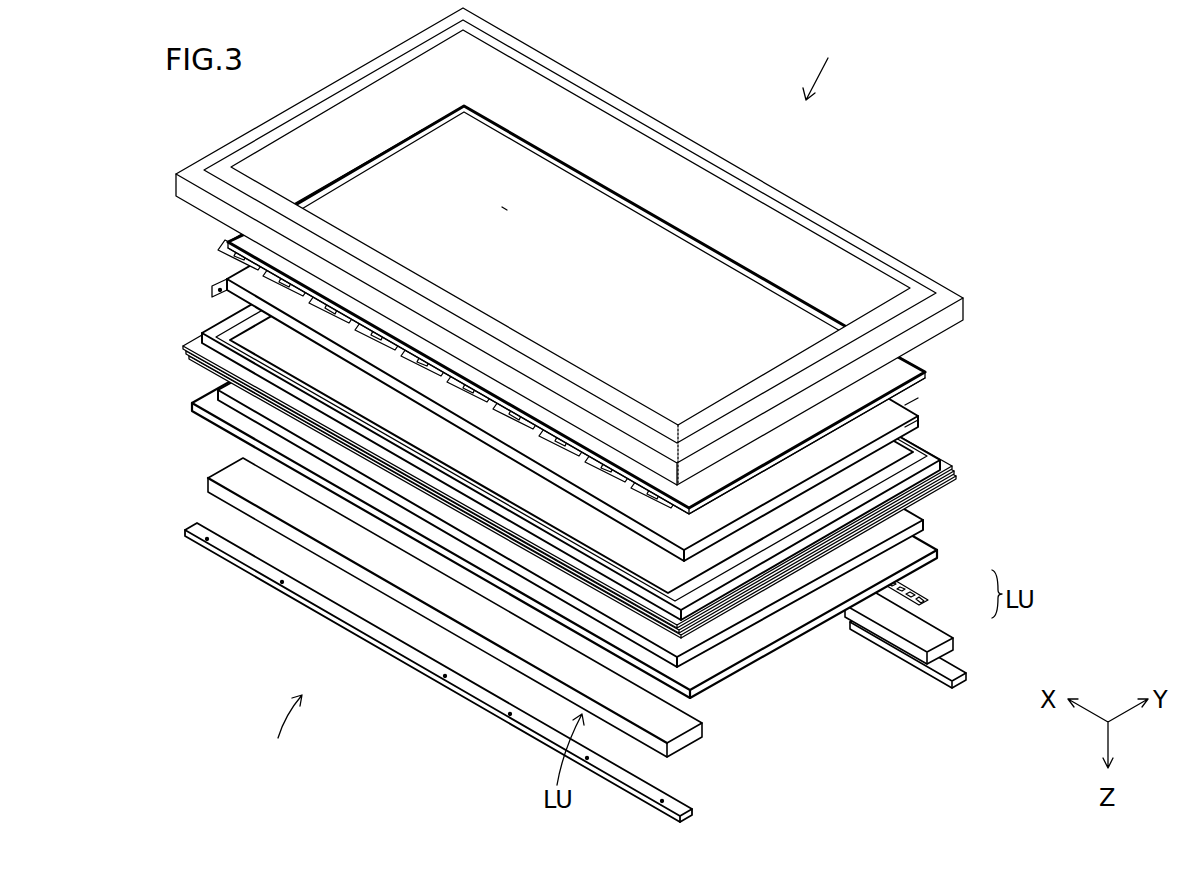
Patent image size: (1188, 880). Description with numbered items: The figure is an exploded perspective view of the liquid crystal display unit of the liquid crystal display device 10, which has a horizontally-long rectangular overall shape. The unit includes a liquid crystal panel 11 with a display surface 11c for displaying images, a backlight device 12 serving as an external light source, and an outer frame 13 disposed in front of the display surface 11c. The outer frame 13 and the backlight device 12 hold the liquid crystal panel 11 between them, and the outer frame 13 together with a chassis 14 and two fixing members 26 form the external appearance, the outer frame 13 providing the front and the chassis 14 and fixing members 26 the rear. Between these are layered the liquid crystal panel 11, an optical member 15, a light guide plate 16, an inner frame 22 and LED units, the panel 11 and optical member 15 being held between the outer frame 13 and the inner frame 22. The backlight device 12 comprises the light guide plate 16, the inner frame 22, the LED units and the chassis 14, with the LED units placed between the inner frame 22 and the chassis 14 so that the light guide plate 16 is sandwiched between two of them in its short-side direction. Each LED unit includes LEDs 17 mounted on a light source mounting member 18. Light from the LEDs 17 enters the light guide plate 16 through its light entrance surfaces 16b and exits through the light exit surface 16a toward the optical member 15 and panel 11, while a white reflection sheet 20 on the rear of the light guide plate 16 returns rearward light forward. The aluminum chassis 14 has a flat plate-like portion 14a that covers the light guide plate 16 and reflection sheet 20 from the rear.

The liquid crystal display device 10 is at (895, 53).
The liquid crystal panel 11 is at (600, 332).
The display surface 11c is at (507, 210).
The backlight device 12 is at (283, 733).
The outer frame 13 is at (652, 113).
The chassis 14 is at (744, 662).
The plate-like portion 14a is at (564, 515).
The optical member 15 is at (908, 426).
The light guide plate 16 is at (604, 475).
The light exit surface 16a is at (566, 578).
The light entrance surface 16b is at (463, 533).
The LED 17 is at (888, 586).
The light source mounting member 18 is at (690, 745).
The reflection sheet 20 is at (755, 620).
The inner frame 22 is at (942, 462).
The fixing member 26 is at (215, 558).